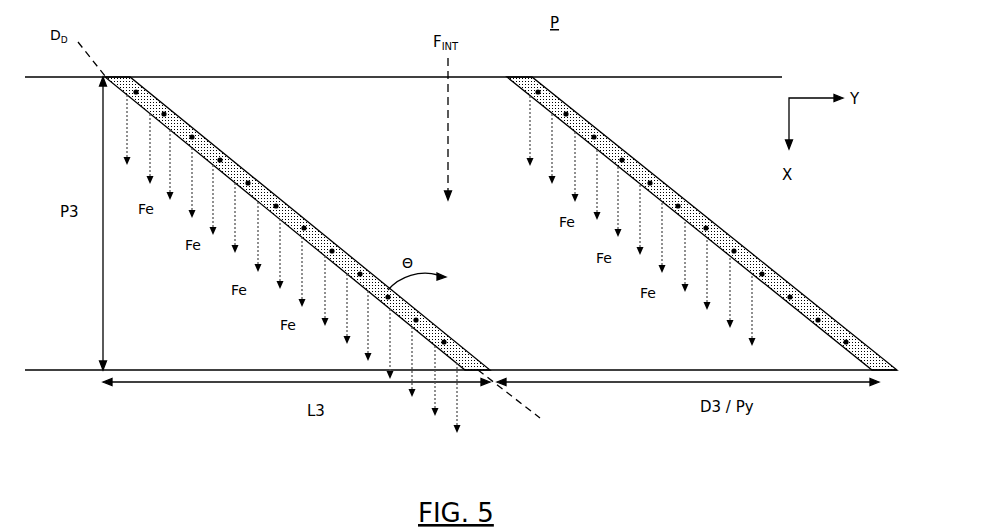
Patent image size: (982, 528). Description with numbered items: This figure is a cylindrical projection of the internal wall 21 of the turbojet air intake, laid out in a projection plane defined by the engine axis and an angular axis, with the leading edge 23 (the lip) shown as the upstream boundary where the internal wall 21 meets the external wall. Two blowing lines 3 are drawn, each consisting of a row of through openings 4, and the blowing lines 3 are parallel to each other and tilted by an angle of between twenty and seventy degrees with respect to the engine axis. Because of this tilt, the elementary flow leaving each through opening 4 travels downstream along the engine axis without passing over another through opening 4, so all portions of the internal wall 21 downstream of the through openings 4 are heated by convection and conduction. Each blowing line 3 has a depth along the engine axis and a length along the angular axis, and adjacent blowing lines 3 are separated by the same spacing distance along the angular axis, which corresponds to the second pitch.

The blowing line 3 is at (211, 140).
The through opening 4 is at (240, 165).
The internal wall 21 is at (461, 337).
The leading edge 23 is at (350, 77).